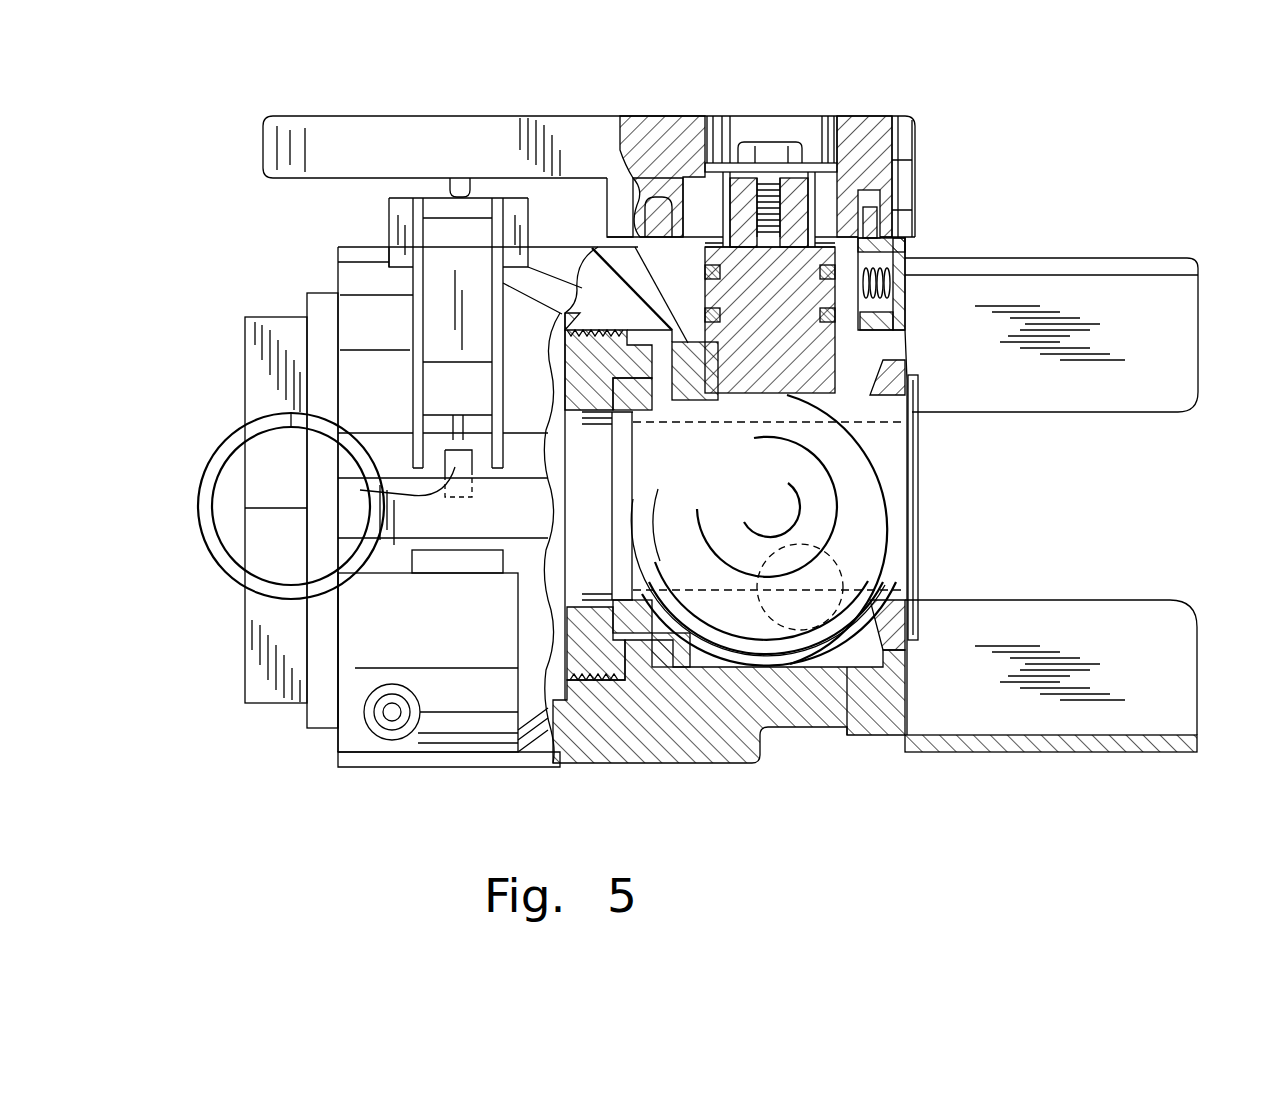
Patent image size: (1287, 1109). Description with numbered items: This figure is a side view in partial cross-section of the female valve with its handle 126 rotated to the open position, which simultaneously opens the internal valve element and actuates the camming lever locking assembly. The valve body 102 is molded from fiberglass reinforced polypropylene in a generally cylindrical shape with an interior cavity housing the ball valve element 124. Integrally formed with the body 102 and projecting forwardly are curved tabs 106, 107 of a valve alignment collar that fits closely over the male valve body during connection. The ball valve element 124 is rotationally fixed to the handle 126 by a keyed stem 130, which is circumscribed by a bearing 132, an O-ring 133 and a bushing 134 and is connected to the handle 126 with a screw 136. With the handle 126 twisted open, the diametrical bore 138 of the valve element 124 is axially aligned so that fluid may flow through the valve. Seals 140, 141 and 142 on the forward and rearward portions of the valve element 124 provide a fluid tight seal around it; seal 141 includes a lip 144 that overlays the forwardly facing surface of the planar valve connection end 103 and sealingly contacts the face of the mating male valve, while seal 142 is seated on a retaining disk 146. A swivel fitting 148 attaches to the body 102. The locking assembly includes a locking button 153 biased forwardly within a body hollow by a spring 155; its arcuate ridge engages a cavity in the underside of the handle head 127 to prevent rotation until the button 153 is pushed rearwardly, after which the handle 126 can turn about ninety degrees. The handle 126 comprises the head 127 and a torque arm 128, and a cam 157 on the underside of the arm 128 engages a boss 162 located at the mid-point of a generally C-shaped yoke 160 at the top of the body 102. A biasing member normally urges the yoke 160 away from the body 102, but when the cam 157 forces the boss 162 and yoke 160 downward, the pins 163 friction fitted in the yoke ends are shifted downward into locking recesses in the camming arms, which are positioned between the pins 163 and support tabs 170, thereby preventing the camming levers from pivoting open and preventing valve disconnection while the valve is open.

The valve body 102 is at (735, 745).
The valve connection end 103 is at (905, 718).
The curved tab 106 is at (1170, 325).
The curved tab 107 is at (1155, 745).
The ball valve element 124 is at (777, 607).
The valve handle 126 is at (602, 108).
The handle head 127 is at (850, 130).
The torque arm 128 is at (405, 127).
The keyed stem 130 is at (845, 350).
The bearing 132 is at (800, 302).
The O-ring 133 is at (713, 290).
The bushing 134 is at (898, 175).
The screw 136 is at (775, 153).
The diametrical bore 138 is at (772, 605).
The seal 140 is at (870, 645).
The seal 141 is at (912, 642).
The seal 142 is at (632, 640).
The lip 144 is at (928, 380).
The retaining disk 146 is at (572, 660).
The swivel fitting 148 is at (258, 382).
The locking button 153 is at (880, 225).
The spring 155 is at (893, 268).
The cam 157 is at (458, 188).
The yoke 160 is at (452, 373).
The boss 162 is at (440, 207).
The pins 163 is at (300, 415).
The support tabs 170 is at (478, 560).